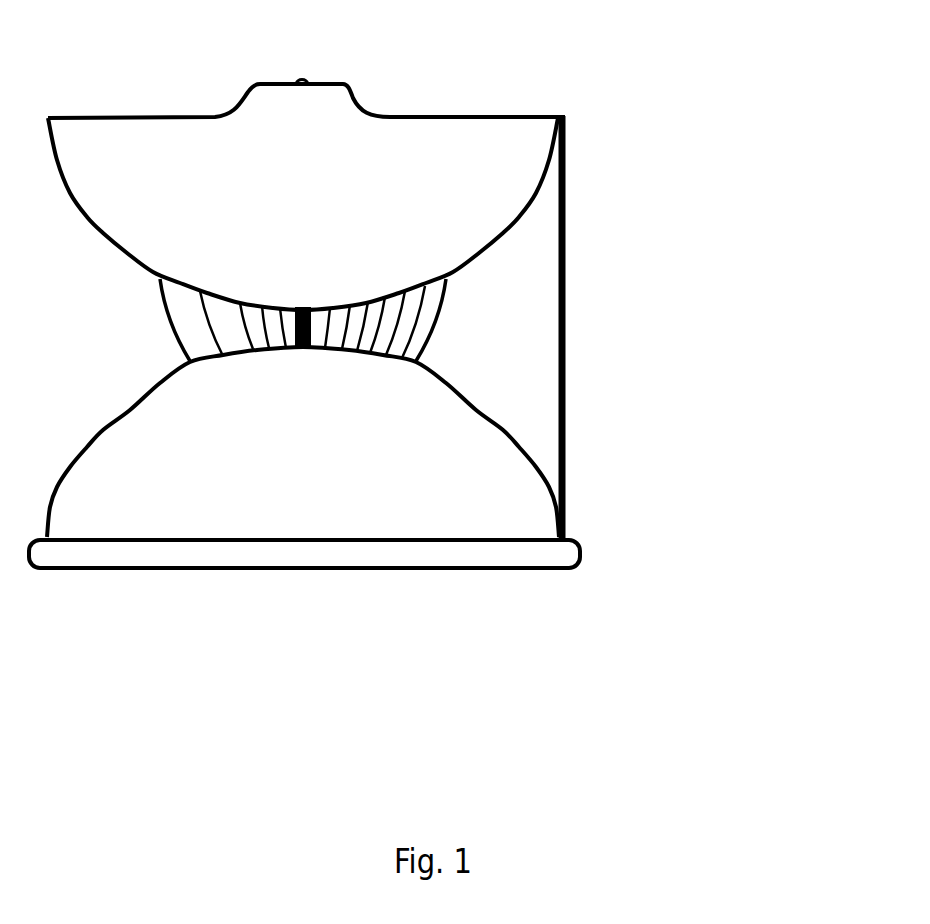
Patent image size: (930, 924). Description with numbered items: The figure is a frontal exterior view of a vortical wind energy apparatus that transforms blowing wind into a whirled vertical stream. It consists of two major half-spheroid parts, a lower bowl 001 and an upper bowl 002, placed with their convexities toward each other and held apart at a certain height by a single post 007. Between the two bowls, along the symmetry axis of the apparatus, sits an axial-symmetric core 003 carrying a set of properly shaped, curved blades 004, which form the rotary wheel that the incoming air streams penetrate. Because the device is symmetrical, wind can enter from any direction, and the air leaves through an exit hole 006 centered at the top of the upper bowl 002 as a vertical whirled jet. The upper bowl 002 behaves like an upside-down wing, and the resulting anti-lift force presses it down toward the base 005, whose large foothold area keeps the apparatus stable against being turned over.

The lower bowl 001 is at (363, 418).
The upper bowl 002 is at (373, 158).
The core 003 is at (305, 307).
The blades 004 is at (375, 322).
The base 005 is at (407, 557).
The exit hole 006 is at (310, 80).
The post 007 is at (657, 290).